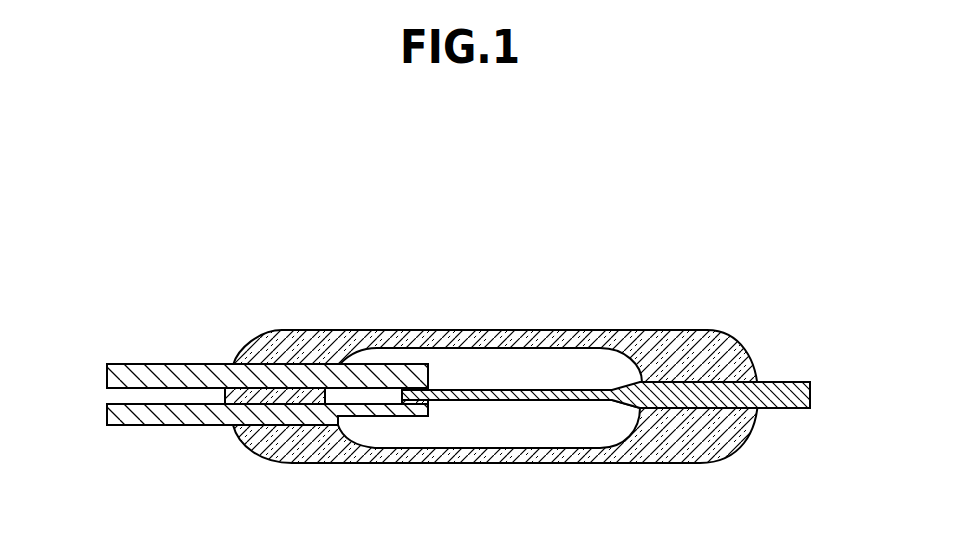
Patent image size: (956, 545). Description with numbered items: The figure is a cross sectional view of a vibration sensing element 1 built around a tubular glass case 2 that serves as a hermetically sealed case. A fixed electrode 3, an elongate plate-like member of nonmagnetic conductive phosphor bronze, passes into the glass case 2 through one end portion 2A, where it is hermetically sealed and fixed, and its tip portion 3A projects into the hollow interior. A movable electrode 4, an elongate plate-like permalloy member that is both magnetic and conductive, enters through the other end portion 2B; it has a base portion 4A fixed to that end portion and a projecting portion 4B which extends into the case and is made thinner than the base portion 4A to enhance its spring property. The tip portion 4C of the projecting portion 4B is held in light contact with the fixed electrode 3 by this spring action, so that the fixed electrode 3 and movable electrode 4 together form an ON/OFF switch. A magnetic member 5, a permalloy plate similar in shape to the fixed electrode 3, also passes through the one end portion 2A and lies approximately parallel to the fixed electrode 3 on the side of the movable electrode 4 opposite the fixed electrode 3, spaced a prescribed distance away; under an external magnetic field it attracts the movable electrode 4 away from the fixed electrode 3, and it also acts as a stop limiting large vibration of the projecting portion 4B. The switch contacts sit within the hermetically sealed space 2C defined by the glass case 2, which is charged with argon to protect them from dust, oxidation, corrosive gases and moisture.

The vibration sensing element 1 is at (462, 265).
The glass case 2 is at (648, 330).
The one end portion 2A is at (272, 328).
The other end portion 2B is at (743, 343).
The hermetically sealed space 2C is at (575, 358).
The fixed electrode 3 is at (160, 362).
The tip portion of the fixed electrode 3A is at (415, 372).
The movable electrode 4 is at (598, 407).
The base portion 4A is at (782, 388).
The projecting portion 4B is at (537, 402).
The tip portion of the movable electrode 4C is at (418, 418).
The magnetic member 5 is at (360, 420).